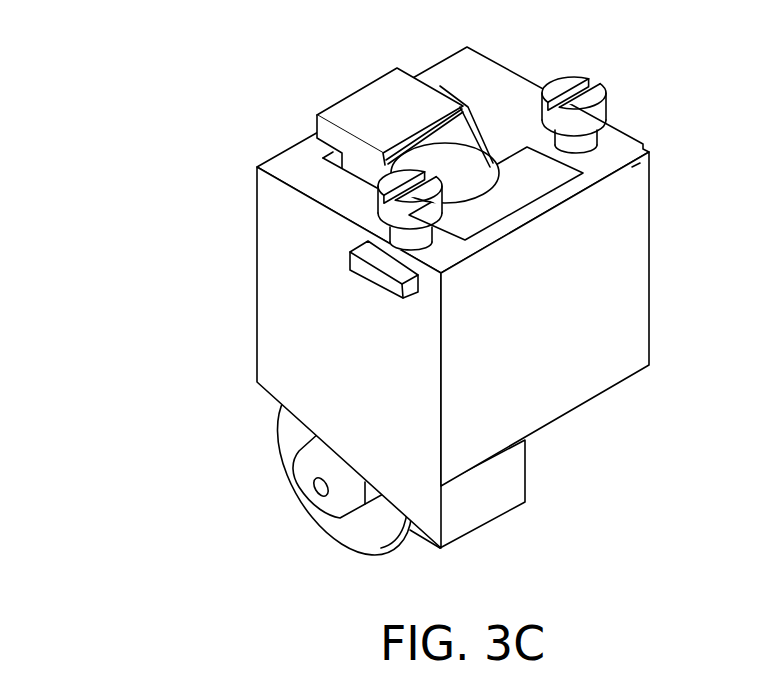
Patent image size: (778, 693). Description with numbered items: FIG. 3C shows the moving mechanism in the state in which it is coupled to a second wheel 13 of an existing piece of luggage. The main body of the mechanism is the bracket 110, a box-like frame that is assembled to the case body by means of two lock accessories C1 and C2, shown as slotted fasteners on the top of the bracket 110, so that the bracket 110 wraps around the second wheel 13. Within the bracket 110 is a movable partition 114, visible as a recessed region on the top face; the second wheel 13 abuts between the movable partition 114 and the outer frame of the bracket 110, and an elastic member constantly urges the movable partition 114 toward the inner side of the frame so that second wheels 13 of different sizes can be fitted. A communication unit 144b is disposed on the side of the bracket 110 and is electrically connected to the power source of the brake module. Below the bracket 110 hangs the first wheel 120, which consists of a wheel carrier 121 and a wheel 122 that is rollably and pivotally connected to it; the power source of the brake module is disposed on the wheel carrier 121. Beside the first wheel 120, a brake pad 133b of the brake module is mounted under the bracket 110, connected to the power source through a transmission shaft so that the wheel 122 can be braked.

The second wheel 13 is at (453, 167).
The bracket 110 is at (613, 320).
The movable partition 114 is at (528, 177).
The first wheel 120 is at (224, 309).
The wheel carrier 121 is at (330, 535).
The wheel 122 is at (292, 430).
The brake pad 133b is at (495, 488).
The communication unit 144b is at (373, 272).
The lock accessory C1 is at (597, 115).
The lock accessory C2 is at (410, 222).